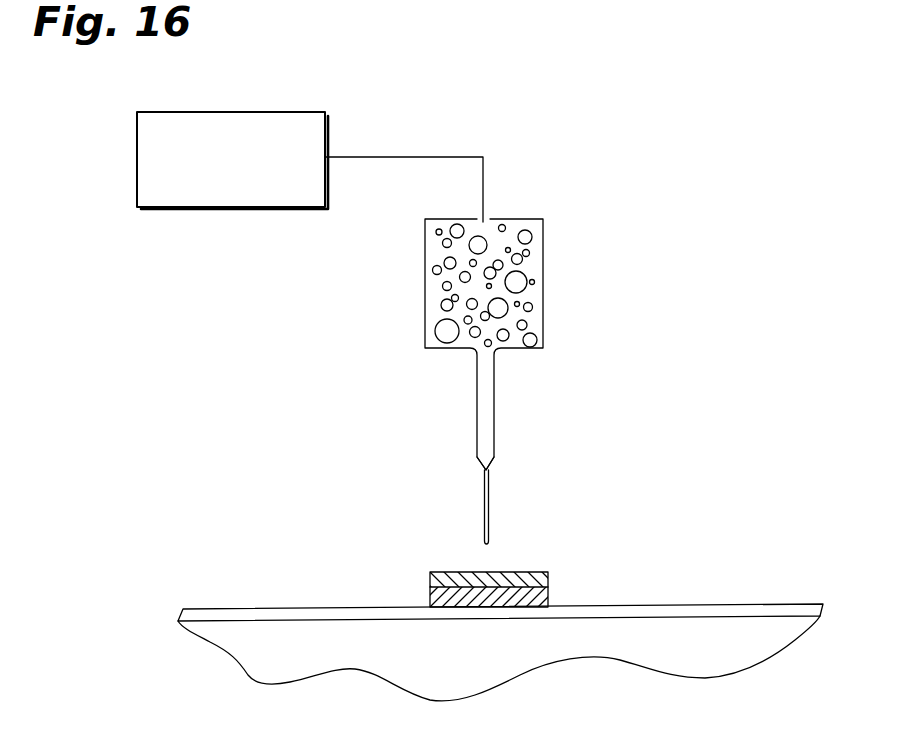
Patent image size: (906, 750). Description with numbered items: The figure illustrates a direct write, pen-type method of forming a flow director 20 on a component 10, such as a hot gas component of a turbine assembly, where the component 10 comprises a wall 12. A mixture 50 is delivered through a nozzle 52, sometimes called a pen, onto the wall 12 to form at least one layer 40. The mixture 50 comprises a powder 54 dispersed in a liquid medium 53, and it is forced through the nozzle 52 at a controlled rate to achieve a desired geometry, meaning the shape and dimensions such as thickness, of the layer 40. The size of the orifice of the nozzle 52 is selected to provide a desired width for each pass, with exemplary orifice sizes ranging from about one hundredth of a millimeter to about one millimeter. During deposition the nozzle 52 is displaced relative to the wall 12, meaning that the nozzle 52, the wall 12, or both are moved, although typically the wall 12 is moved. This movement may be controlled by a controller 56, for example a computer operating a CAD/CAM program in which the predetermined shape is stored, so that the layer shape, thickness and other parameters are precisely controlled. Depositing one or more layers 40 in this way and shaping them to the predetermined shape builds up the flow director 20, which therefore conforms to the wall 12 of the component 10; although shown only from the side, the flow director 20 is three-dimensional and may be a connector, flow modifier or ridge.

The component 10 is at (743, 651).
The wall 12 is at (733, 608).
The flow director 20 is at (462, 566).
The layer 40 is at (548, 600).
The mixture 50 is at (519, 334).
The nozzle 52 is at (490, 468).
The liquid medium 53 is at (532, 266).
The powder 54 is at (528, 238).
The controller 56 is at (244, 181).